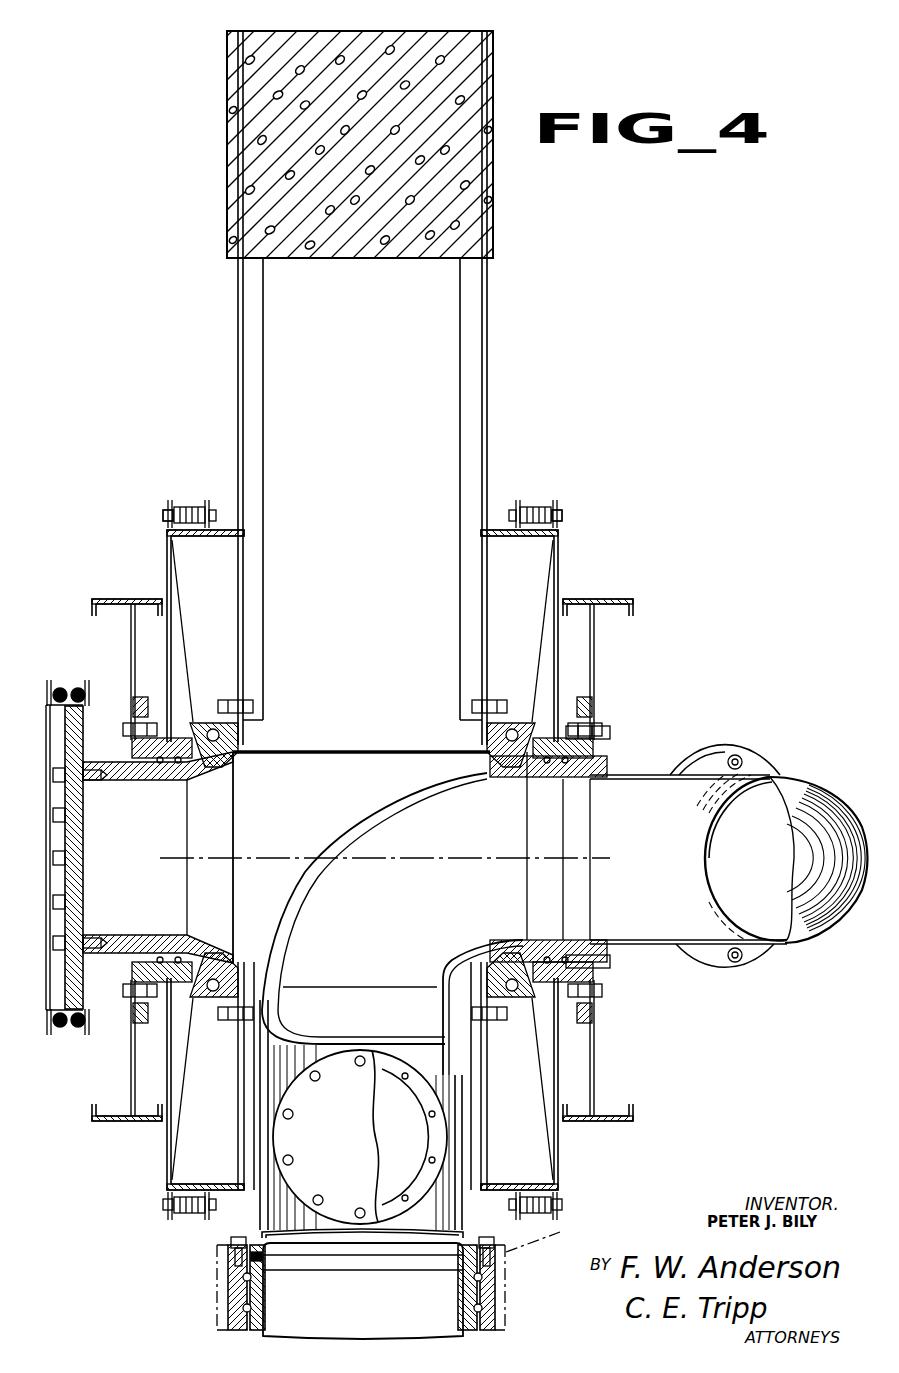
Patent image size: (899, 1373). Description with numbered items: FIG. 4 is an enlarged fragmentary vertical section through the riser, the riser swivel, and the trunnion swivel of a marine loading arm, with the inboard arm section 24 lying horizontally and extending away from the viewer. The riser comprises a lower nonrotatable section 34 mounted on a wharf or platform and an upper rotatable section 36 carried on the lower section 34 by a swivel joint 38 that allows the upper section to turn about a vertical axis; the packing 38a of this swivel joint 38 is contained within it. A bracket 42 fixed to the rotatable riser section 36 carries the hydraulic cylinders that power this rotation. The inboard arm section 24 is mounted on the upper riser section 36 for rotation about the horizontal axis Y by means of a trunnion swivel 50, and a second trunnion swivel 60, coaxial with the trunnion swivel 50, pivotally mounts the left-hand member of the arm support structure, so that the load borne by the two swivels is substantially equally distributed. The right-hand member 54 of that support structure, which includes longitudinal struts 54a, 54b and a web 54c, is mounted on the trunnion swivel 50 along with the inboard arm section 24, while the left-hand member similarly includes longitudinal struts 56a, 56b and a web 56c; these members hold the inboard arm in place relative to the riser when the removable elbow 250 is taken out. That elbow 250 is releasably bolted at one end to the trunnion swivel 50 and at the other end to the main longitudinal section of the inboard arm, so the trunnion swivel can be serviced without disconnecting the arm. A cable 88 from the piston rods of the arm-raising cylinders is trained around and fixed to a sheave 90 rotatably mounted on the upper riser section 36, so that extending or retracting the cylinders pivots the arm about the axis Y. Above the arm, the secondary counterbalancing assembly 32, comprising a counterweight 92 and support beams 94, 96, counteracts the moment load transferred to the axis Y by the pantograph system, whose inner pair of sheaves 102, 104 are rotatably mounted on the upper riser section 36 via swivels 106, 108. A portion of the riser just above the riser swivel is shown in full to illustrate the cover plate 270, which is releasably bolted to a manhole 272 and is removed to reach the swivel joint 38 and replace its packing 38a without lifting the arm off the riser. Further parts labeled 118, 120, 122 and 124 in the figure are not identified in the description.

The inboard arm section 24 is at (812, 781).
The secondary counterbalancing assembly 32 is at (227, 189).
The lower nonrotatable section 34 is at (372, 1310).
The upper rotatable section 36 is at (262, 1158).
The swivel joint 38 is at (488, 1278).
The packing 38a is at (258, 1262).
The bracket 42 is at (552, 1228).
The trunnion swivel 50 is at (598, 738).
The right-hand member 54 is at (592, 837).
The longitudinal strut 54a is at (600, 598).
The longitudinal strut 54b is at (594, 1122).
The web 54c is at (594, 688).
The longitudinal strut 56a is at (98, 598).
The longitudinal strut 56b is at (115, 1122).
The web 56c is at (131, 635).
The second trunnion swivel 60 is at (150, 752).
The cable 88 is at (62, 689).
The sheave 90 is at (46, 1024).
The counterweight 92 is at (356, 240).
The support beam 94 is at (458, 370).
The support beam 96 is at (262, 378).
The inner sheave 102 is at (556, 540).
The inner sheave 104 is at (168, 543).
The swivel 106 is at (518, 722).
The swivel 108 is at (205, 722).
The right top bolt 118 is at (540, 508).
The left top bolt 120 is at (190, 508).
The right nut 122 is at (562, 500).
The left nut 124 is at (163, 512).
The removable elbow 250 is at (650, 948).
The cover plate 270 is at (362, 1134).
The manhole 272 is at (425, 1167).
The horizontal axis Y is at (418, 858).